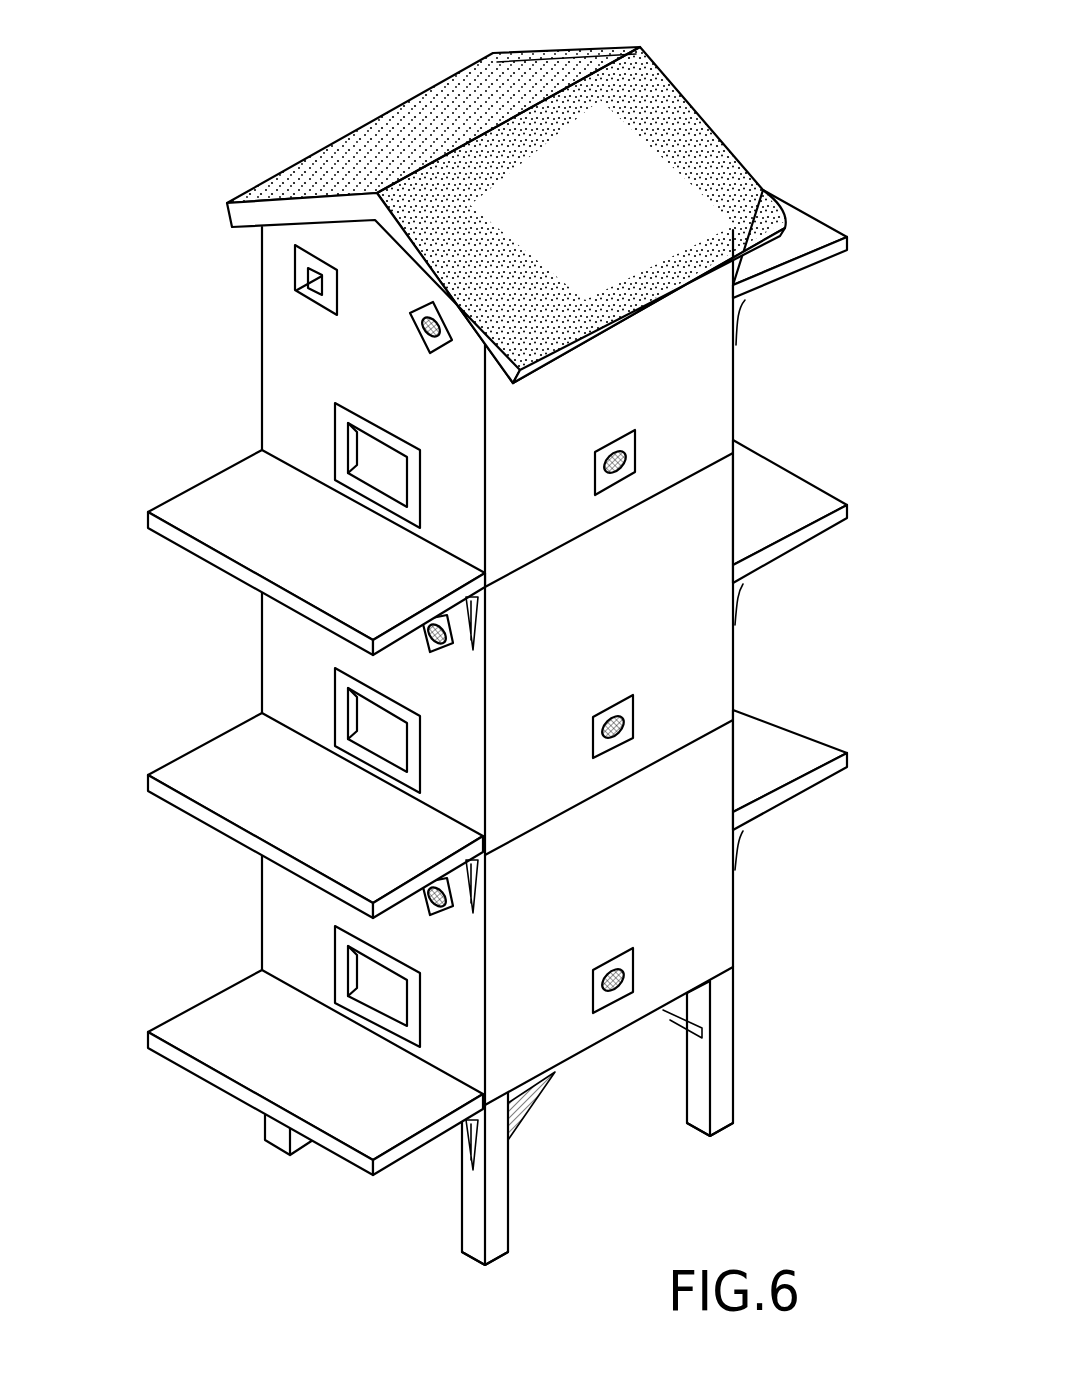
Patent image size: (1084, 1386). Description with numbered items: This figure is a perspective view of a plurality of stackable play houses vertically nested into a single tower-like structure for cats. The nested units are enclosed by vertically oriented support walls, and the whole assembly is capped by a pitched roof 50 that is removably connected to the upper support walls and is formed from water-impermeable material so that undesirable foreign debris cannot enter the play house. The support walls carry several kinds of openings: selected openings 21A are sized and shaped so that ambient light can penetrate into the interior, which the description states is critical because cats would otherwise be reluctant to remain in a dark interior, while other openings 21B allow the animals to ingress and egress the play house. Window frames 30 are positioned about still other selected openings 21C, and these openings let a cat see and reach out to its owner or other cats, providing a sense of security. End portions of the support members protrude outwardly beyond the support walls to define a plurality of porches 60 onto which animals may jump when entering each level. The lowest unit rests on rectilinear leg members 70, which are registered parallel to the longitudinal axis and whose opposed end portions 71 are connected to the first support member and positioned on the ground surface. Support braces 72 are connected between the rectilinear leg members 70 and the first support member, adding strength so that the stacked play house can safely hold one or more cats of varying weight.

The pitched roof 50 is at (682, 137).
The porches 60 is at (818, 222).
The window frames 30 is at (295, 270).
The selected openings with window frames 21C is at (310, 281).
The light-admitting openings 21A is at (413, 327).
The ingress and egress openings 21B is at (372, 457).
The rectilinear leg members 70 is at (462, 1197).
The opposed end portions of leg members 71 is at (483, 1263).
The support braces 72 is at (667, 1018).